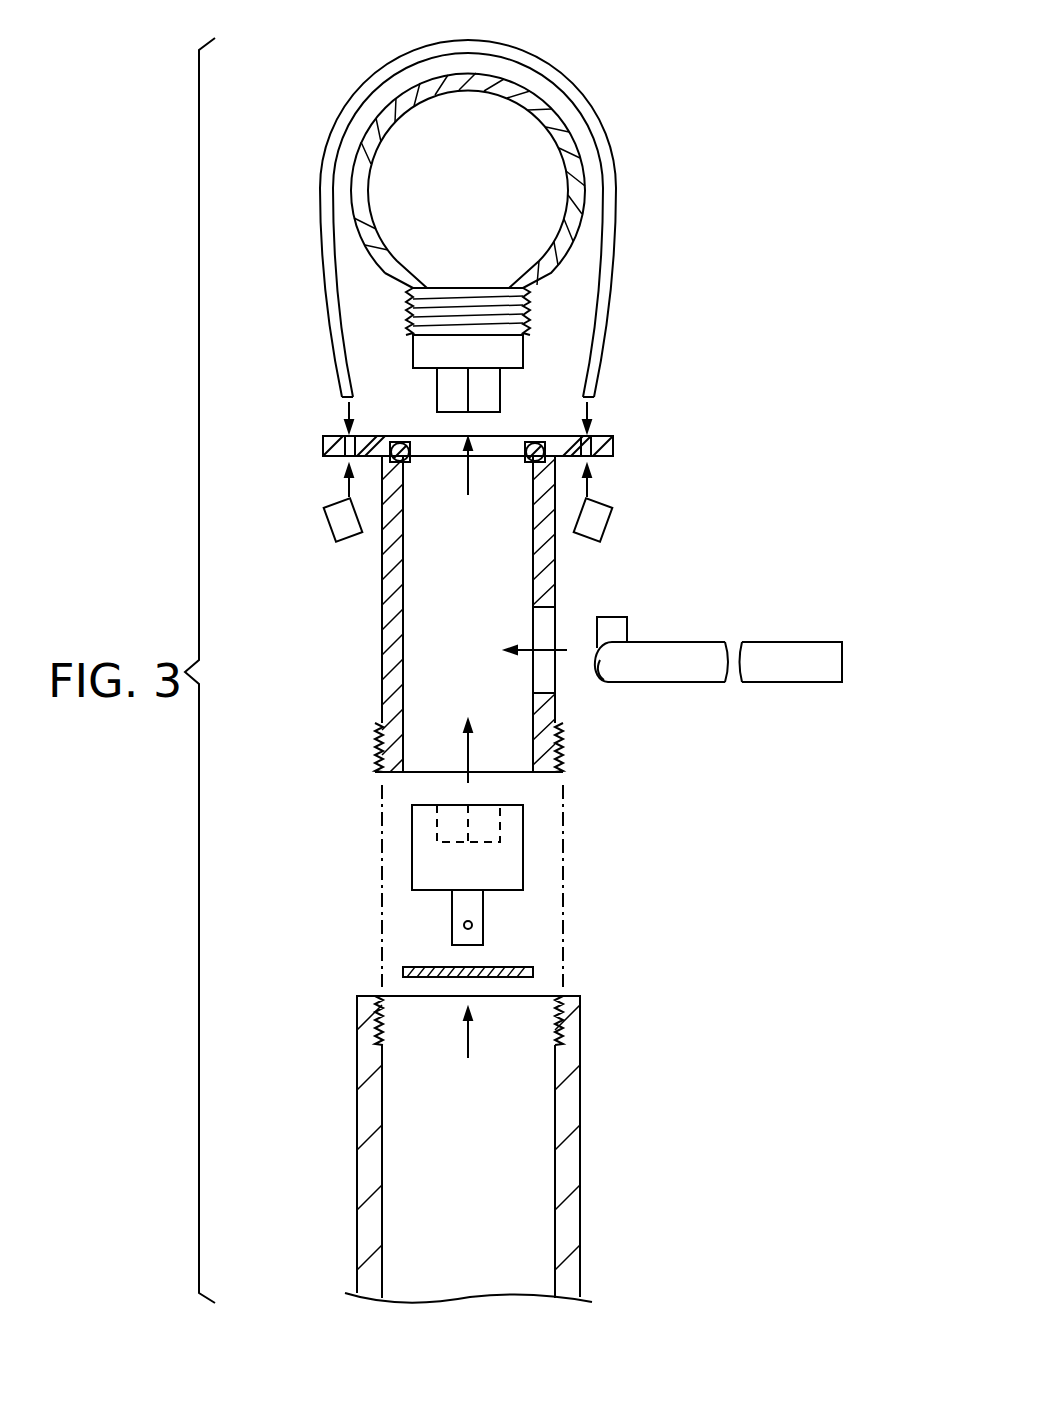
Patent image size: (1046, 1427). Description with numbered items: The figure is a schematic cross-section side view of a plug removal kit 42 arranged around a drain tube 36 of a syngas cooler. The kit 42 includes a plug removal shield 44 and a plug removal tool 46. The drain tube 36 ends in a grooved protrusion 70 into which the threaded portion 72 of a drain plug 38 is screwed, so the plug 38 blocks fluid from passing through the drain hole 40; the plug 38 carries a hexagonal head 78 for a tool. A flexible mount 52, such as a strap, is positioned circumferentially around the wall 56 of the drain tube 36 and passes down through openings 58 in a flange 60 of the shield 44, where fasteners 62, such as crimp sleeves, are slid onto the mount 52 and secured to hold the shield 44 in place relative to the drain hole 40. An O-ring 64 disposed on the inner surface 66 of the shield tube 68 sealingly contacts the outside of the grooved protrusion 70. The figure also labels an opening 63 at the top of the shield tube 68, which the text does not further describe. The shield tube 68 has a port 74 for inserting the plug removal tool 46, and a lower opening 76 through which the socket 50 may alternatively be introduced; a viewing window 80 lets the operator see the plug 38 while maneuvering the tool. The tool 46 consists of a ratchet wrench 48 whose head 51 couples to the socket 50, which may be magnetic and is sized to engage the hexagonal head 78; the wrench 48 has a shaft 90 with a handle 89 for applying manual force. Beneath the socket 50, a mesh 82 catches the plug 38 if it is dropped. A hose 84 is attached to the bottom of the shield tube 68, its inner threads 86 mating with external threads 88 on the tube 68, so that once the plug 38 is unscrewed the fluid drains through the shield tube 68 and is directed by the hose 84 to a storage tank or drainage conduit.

The drain tube 36 is at (432, 154).
The drain plug 38 is at (456, 362).
The drain hole 40 is at (467, 336).
The plug removal kit 42 is at (672, 355).
The plug removal shield 44 is at (288, 332).
The plug removal tool 46 is at (600, 781).
The ratchet wrench 48 is at (668, 642).
The socket 50 is at (412, 847).
The head 51 is at (617, 667).
The mount 52 is at (573, 82).
The wall 56 is at (365, 150).
The openings 58 is at (347, 440).
The flange 60 is at (330, 460).
The fasteners 62 is at (327, 517).
The central opening 63 is at (465, 433).
The O-ring 64 is at (410, 457).
The inner surface 66 is at (468, 614).
The shield tube 68 is at (382, 660).
The grooved protrusion 70 is at (413, 322).
The threaded portion 72 is at (465, 297).
The port 74 is at (550, 628).
The opening 76 is at (513, 772).
The hexagonal head 78 is at (490, 382).
The viewing window 80 is at (385, 557).
The mesh 82 is at (527, 967).
The hose 84 is at (496, 1149).
The inner threads 86 is at (377, 1025).
The external threads 88 is at (375, 752).
The handle 89 is at (795, 645).
The shaft 90 is at (843, 662).